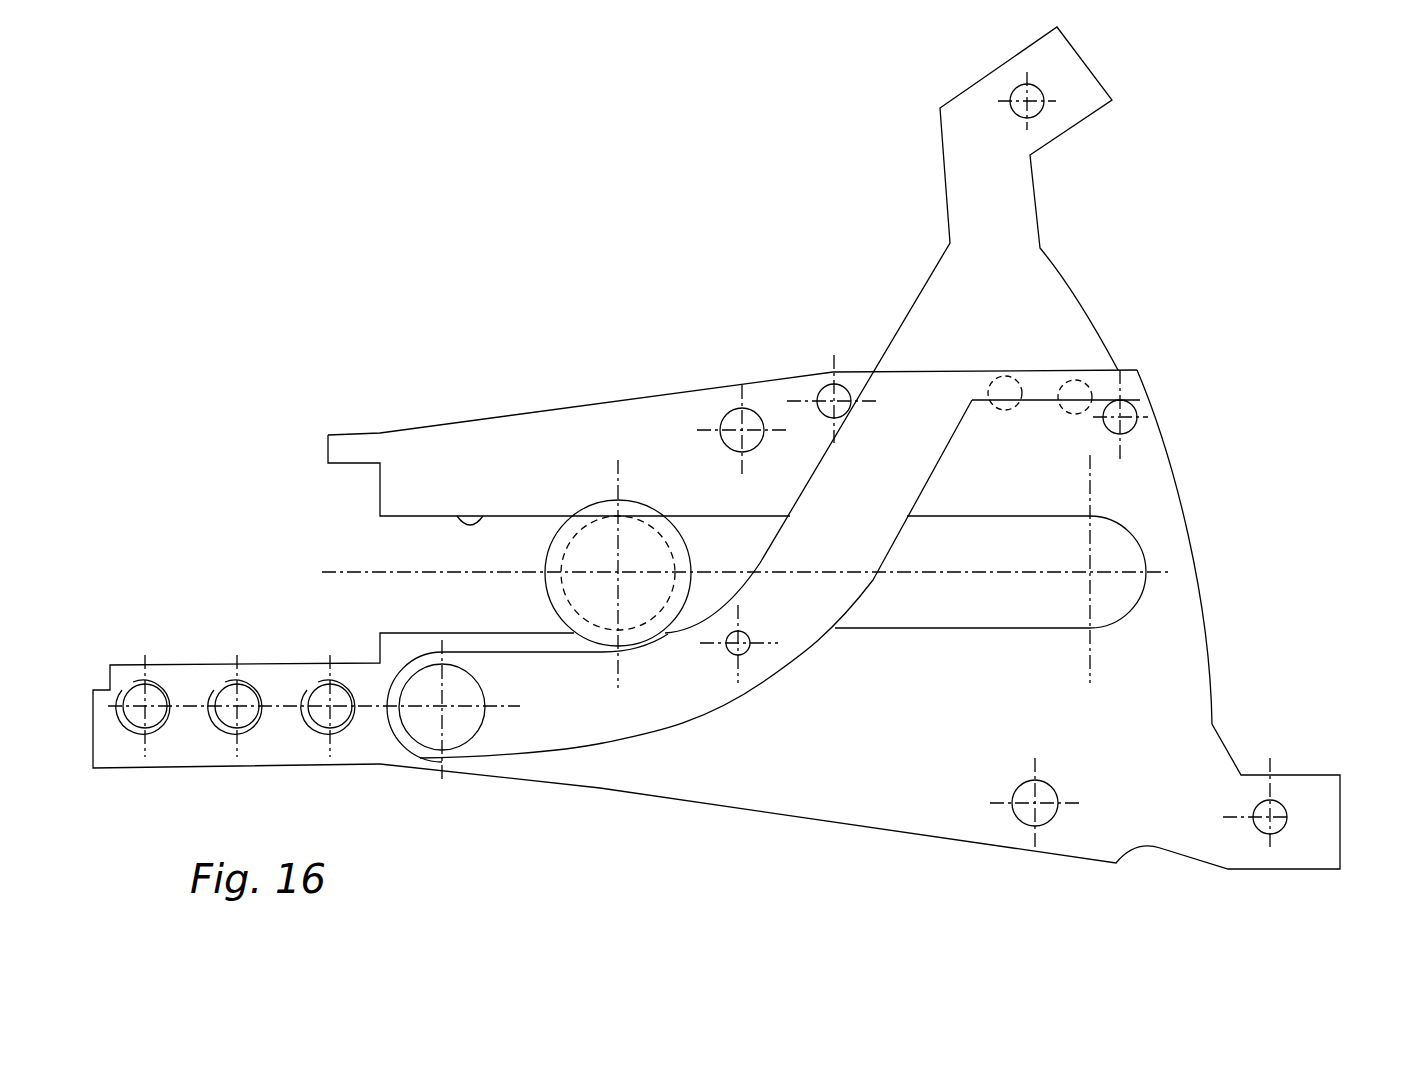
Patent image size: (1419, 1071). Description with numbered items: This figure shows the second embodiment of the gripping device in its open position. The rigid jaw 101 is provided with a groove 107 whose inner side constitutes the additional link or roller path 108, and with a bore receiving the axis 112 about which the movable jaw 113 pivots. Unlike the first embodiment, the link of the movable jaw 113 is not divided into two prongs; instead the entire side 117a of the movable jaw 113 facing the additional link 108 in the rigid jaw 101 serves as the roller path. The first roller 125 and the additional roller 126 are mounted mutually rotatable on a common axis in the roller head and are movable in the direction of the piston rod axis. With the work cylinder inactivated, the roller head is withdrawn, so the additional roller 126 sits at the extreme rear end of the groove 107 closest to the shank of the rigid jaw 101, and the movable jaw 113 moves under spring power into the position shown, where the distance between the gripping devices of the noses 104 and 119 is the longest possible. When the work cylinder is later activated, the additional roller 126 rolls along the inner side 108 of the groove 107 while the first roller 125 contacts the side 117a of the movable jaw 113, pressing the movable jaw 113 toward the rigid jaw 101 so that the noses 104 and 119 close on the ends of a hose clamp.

The rigid jaw 101 is at (637, 755).
The nose 104 is at (1292, 818).
The groove 107 is at (478, 569).
The additional link or roller path 108 is at (457, 518).
The axis 112 is at (407, 738).
The movable jaw 113 is at (568, 702).
The side of the jaw (roller path or link) 117a is at (932, 270).
The nose 119 is at (1057, 117).
The first roller 125 is at (602, 515).
The additional roller 126 is at (598, 567).